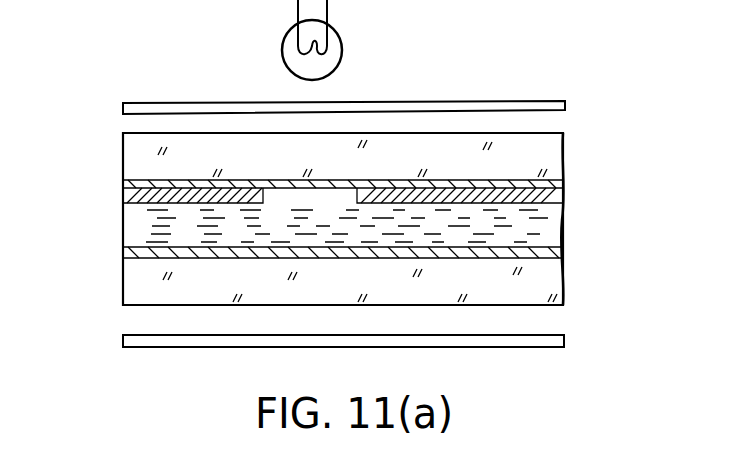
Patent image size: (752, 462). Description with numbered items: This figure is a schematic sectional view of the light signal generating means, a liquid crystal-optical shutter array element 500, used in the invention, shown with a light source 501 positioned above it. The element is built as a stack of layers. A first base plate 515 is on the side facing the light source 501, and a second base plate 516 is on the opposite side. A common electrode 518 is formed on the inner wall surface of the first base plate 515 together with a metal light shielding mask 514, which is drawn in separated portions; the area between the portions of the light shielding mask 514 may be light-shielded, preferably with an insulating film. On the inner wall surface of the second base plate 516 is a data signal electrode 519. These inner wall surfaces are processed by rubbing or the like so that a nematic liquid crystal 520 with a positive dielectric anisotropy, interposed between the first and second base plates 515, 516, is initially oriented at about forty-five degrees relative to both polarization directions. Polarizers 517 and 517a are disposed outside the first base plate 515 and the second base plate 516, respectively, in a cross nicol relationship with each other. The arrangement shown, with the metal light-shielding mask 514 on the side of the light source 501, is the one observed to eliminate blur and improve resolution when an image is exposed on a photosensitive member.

The light source 501 is at (343, 50).
The polarizer 517 is at (123, 105).
The first base plate 515 is at (560, 153).
The common electrode 518 is at (565, 186).
The metal light shielding mask 514 is at (123, 197).
The liquid crystal layer 520 is at (135, 233).
The data signal electrode 519 is at (563, 252).
The second base plate 516 is at (563, 288).
The polarizer 517a is at (123, 341).
The liquid crystal display cell 500 is at (605, 212).